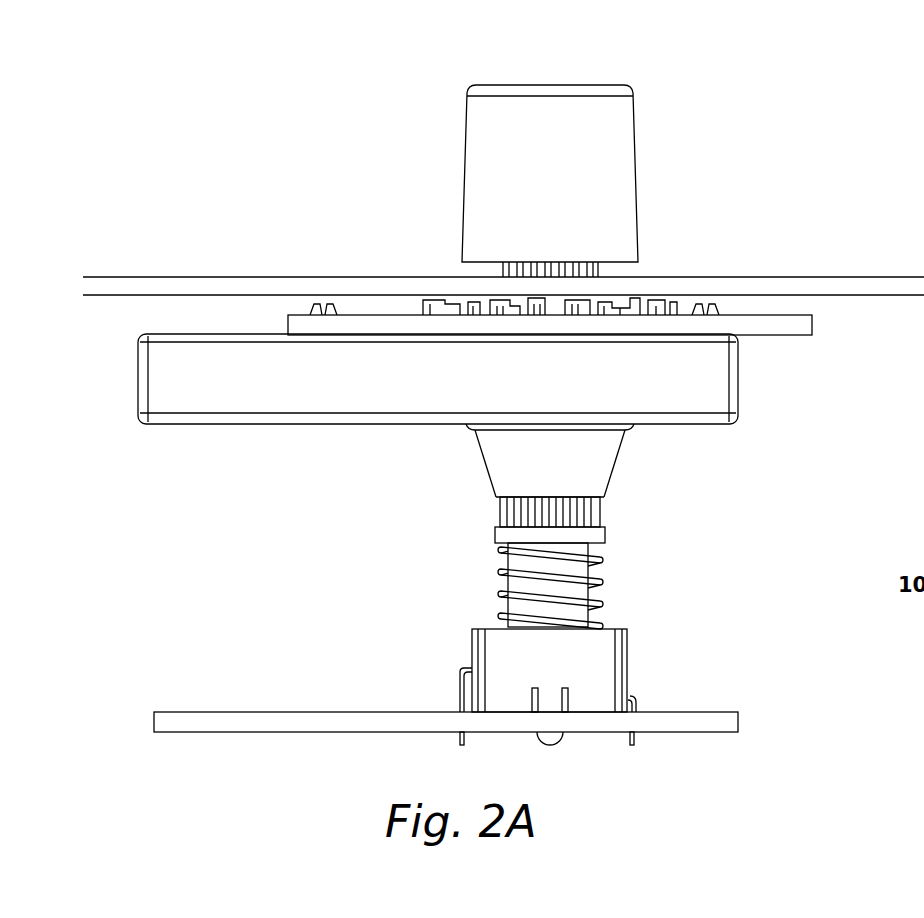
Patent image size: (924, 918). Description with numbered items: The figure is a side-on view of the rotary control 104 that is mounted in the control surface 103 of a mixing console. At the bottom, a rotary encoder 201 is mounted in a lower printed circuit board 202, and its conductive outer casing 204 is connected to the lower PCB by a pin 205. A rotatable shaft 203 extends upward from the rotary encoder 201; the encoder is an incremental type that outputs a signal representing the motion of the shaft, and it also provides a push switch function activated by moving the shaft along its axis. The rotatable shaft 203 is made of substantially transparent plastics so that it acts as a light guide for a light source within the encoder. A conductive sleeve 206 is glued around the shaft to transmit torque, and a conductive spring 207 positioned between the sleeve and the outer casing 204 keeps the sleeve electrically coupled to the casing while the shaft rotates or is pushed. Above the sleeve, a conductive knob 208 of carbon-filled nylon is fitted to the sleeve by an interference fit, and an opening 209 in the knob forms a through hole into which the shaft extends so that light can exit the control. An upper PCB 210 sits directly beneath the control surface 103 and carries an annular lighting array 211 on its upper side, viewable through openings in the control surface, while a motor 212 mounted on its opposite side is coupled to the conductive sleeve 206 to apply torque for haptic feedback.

The rotary control 104 is at (241, 86).
The control surface 103 is at (145, 277).
The opening 209 is at (579, 150).
The conductive knob 208 is at (624, 131).
The annular lighting array 211 is at (636, 298).
The upper PCB 210 is at (812, 322).
The motor 212 is at (737, 403).
The conductive sleeve 206 is at (592, 510).
The rotatable shaft 203 is at (502, 560).
The conductive spring 207 is at (590, 560).
The rotary encoder 201 is at (598, 660).
The outer casing 204 is at (628, 645).
The lower printed circuit board 202 is at (730, 727).
The pin 205 is at (560, 745).